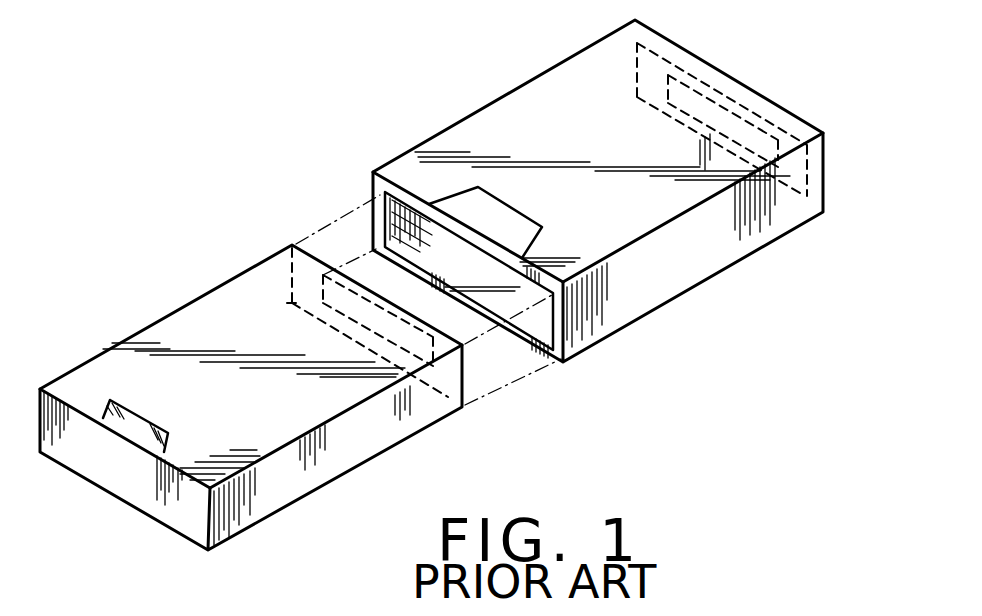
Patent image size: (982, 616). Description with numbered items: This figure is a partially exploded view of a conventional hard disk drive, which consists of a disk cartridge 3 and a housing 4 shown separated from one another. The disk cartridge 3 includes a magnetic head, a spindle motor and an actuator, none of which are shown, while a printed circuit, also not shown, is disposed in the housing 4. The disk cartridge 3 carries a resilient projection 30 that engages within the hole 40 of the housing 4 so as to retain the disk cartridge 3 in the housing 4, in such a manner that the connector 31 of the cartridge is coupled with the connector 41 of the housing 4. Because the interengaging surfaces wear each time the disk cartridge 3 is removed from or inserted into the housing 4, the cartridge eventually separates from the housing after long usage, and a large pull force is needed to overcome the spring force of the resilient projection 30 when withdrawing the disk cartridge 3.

The disk cartridge 3 is at (353, 470).
The resilient projection 30 is at (107, 398).
The connector 31 is at (327, 277).
The housing 4 is at (610, 338).
The hole 40 is at (443, 200).
The connector 41 is at (755, 132).